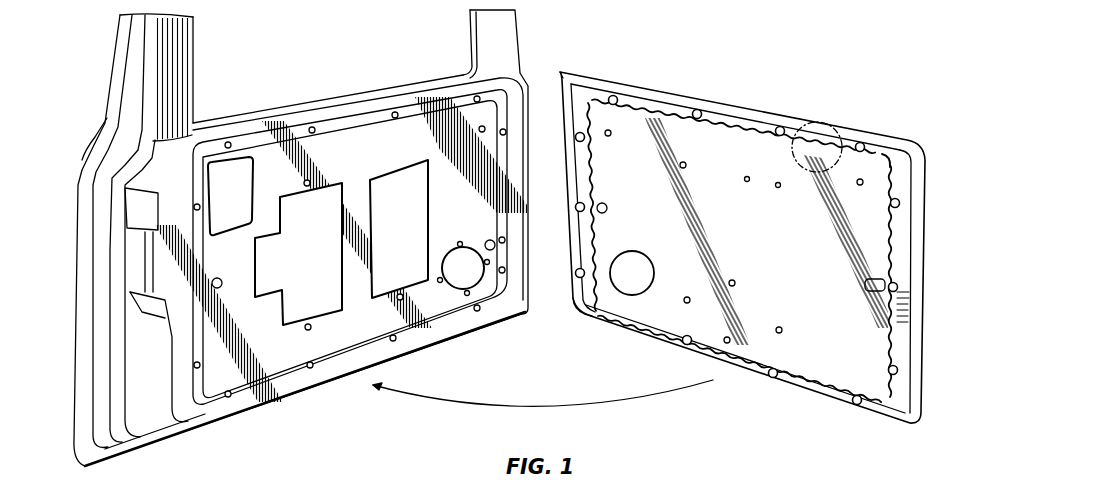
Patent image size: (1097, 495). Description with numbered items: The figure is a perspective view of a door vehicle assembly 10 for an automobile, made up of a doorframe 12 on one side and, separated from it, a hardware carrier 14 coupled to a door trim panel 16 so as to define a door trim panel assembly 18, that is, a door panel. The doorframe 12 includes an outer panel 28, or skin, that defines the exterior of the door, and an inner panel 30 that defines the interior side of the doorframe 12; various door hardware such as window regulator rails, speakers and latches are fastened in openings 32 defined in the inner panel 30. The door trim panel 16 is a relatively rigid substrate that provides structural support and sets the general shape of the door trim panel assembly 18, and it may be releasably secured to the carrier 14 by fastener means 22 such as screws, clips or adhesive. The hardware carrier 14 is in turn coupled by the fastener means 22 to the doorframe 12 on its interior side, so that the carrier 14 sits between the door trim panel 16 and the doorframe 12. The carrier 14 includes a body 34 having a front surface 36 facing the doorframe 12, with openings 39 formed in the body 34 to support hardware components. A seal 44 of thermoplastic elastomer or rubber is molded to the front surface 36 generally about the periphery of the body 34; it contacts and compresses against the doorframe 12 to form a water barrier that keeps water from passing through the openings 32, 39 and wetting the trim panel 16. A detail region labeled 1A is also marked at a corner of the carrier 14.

The door vehicle assembly 10 is at (470, 432).
The doorframe 12 is at (264, 85).
The hardware carrier 14 is at (828, 370).
The door trim panel 16 is at (912, 141).
The door trim panel assembly 18 is at (774, 89).
The fastener means 22 is at (580, 312).
The outer panel 28 is at (97, 143).
The inner panel 30 is at (216, 383).
The openings 32 is at (282, 264).
The body 34 is at (872, 243).
The front surface 36 is at (757, 234).
The openings 39 is at (624, 282).
The seal 44 is at (876, 150).
The detail area 1A is at (827, 133).